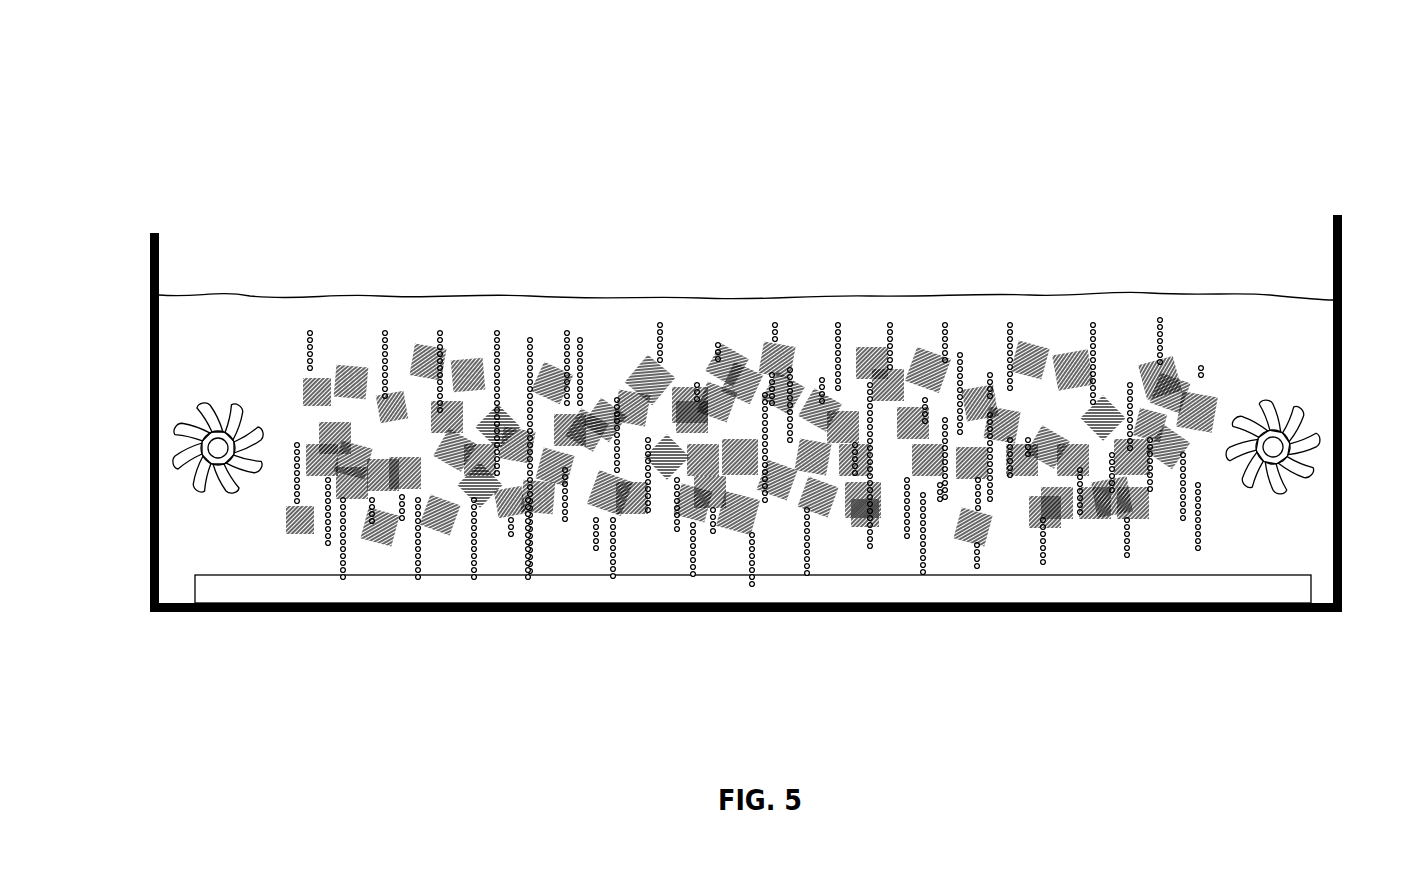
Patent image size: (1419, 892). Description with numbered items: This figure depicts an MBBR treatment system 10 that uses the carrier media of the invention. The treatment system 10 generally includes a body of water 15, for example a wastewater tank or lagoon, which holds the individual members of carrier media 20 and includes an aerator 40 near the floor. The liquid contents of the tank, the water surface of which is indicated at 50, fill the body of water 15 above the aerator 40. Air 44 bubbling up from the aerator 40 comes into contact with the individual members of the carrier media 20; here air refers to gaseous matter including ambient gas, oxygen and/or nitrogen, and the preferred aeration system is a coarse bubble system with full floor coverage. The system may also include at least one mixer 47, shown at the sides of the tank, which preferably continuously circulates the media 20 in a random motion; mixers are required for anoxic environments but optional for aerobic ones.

The treatment system 10 is at (600, 151).
The body of water 15 is at (190, 256).
The carrier media 20 is at (428, 357).
The aerator 40 is at (1032, 591).
The air 44 is at (840, 320).
The mixer 47 is at (213, 495).
The plating solution 50 is at (1060, 307).